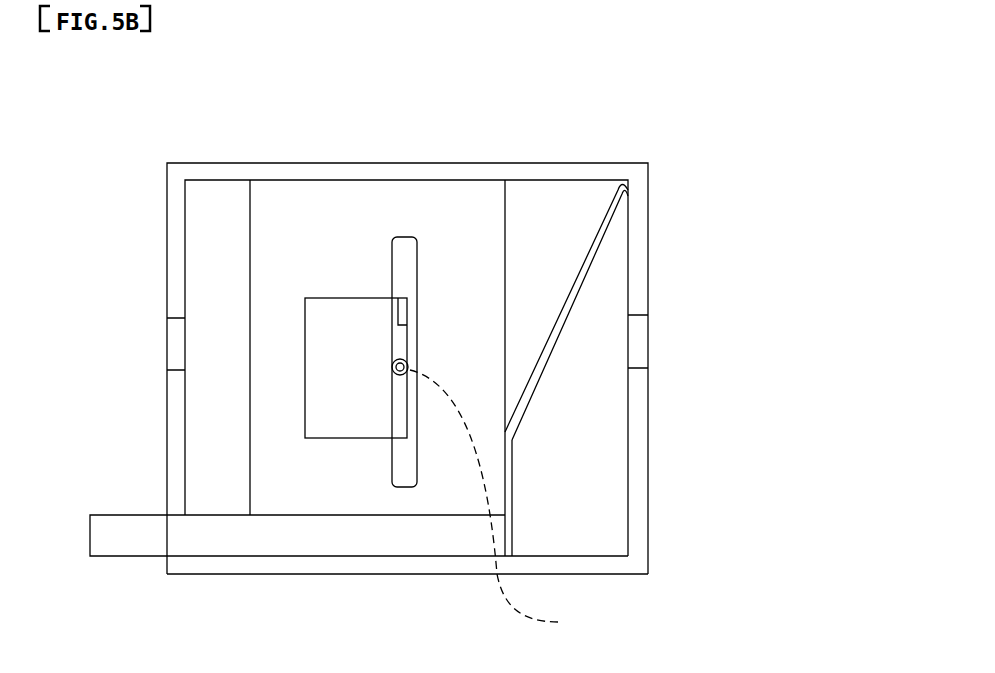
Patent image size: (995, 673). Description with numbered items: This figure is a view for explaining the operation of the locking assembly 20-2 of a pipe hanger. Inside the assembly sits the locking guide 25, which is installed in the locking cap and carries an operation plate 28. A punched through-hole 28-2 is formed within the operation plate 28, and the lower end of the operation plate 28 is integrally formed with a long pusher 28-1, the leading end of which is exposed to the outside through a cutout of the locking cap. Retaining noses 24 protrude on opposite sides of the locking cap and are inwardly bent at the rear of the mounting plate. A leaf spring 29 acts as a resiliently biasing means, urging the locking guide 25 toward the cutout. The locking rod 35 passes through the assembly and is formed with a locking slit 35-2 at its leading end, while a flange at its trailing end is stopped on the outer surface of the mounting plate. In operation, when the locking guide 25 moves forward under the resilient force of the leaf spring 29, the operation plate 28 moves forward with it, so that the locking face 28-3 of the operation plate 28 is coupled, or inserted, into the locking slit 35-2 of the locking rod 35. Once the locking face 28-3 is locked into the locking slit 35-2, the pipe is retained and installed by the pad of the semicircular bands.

The locking assembly 20-2 is at (687, 128).
The locking guide 25 is at (423, 588).
The operation plate 28 is at (275, 215).
The retaining noses 24 is at (172, 352).
The pusher 28-1 is at (110, 515).
The leaf spring 29 is at (632, 543).
The through-hole 28-2 is at (338, 340).
The locking face 28-3 is at (400, 322).
The locking rod 35 is at (396, 358).
The locking slit 35-2 is at (509, 501).